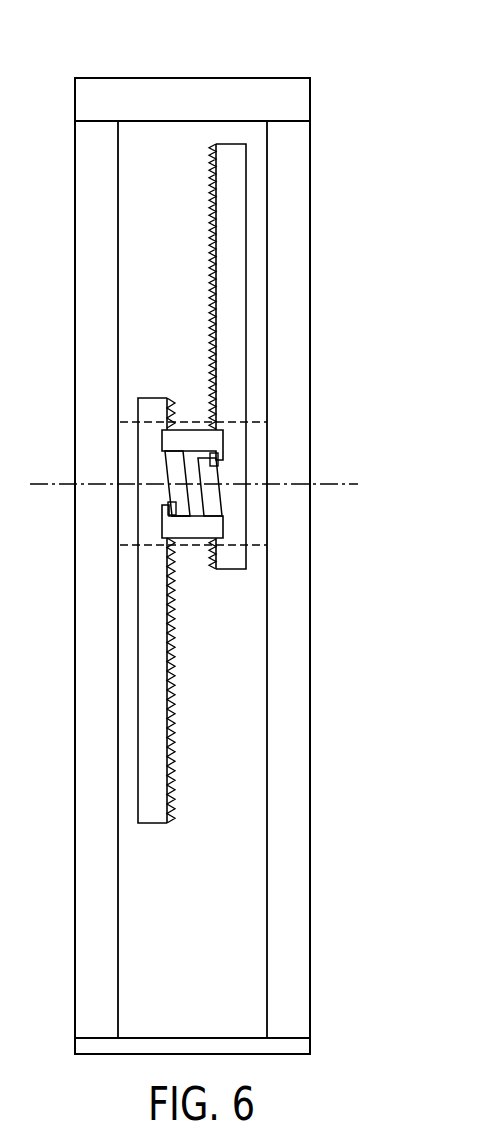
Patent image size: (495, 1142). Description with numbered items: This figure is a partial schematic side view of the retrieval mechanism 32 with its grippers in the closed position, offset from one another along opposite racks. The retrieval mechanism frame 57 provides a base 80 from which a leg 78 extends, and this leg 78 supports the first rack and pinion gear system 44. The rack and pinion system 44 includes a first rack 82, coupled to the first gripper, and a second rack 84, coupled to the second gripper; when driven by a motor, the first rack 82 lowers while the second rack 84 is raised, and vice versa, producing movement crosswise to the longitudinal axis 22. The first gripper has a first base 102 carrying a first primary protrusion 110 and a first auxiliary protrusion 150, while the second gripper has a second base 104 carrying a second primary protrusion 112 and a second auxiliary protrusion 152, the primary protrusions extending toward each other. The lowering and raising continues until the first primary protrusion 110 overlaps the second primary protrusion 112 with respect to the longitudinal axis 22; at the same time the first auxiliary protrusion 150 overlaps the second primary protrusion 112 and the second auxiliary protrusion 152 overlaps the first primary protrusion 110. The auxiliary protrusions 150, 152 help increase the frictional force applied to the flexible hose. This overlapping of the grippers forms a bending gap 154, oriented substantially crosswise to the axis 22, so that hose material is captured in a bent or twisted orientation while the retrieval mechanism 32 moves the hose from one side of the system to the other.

The longitudinal axis 22 is at (336, 486).
The retrieval mechanism 32 is at (234, 69).
The first rack and pinion gear system 44 is at (250, 413).
The retrieval mechanism frame 57 is at (137, 78).
The leg 78 is at (293, 996).
The base 80 is at (310, 1048).
The first rack 82 is at (150, 803).
The second rack 84 is at (233, 395).
The first base 102 is at (193, 440).
The second base 104 is at (195, 527).
The first primary protrusion 110 is at (172, 466).
The second primary protrusion 112 is at (219, 477).
The first auxiliary protrusion 150 is at (222, 459).
The second auxiliary protrusion 152 is at (168, 509).
The bending gap 154 is at (193, 507).